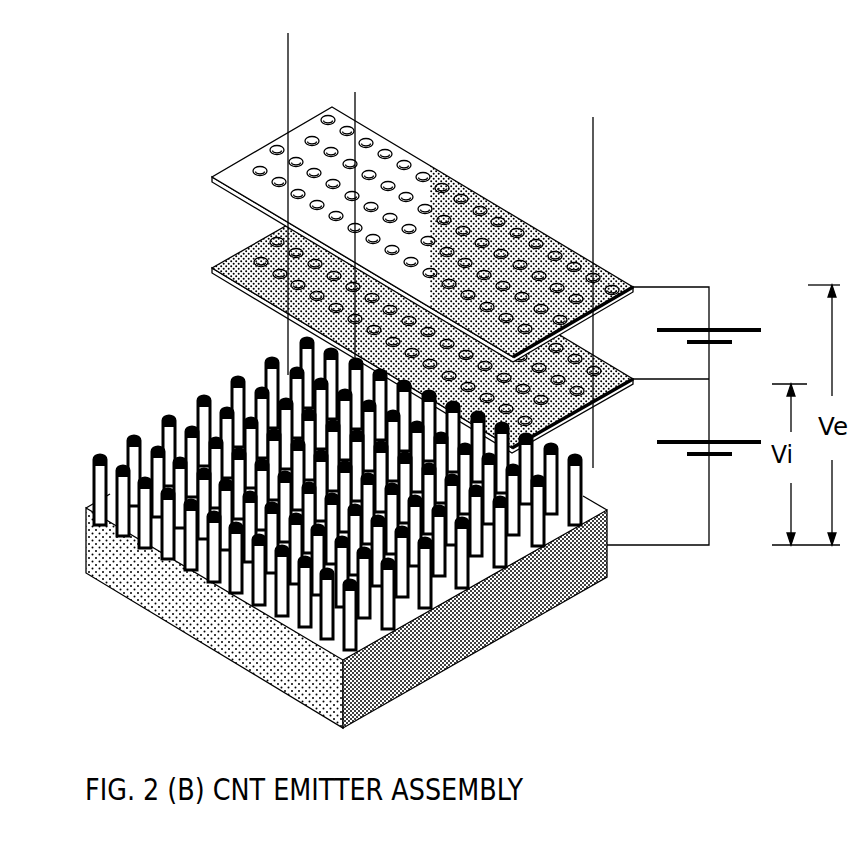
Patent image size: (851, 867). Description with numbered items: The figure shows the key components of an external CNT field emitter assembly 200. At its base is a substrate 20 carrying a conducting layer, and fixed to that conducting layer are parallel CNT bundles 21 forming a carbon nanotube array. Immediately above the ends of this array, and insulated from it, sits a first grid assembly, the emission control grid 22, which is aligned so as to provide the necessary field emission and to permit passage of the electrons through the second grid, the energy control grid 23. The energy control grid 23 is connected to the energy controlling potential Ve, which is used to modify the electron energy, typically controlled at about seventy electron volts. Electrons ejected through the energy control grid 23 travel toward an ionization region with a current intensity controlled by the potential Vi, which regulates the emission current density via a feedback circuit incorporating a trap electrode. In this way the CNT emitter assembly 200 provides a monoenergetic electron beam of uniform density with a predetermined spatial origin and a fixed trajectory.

The CNT field emitter assembly 200 is at (458, 141).
The energy control grid 23 is at (322, 234).
The emission control grid 22 is at (322, 326).
The CNT bundles 21 is at (217, 578).
The substrate 20 is at (482, 629).